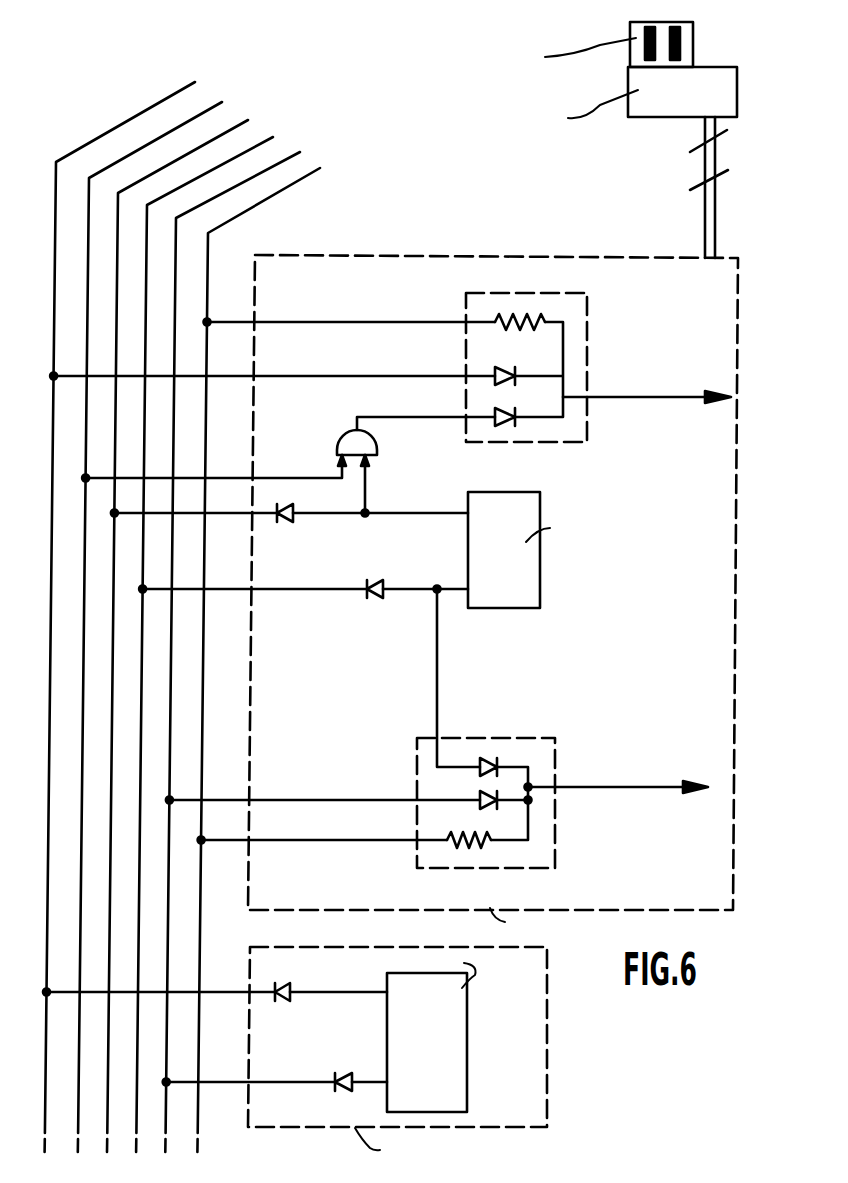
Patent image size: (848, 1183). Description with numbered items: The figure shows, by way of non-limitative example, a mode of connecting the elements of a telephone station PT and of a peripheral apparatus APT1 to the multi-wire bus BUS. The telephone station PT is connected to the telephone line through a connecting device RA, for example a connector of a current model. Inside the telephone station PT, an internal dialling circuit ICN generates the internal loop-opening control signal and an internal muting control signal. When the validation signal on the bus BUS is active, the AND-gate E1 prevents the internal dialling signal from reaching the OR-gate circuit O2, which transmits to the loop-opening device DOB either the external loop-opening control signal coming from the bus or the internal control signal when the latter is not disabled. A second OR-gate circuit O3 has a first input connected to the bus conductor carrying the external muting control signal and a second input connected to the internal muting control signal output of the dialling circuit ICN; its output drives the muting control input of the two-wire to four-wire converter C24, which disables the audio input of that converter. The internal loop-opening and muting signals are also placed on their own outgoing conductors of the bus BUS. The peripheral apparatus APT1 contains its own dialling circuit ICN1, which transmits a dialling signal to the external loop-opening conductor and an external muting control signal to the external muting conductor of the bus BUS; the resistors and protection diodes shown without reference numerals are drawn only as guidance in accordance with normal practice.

The bus BUS is at (398, 147).
The connecting device RA is at (659, 95).
The telephone station PT is at (705, 575).
The OR-gate circuit O2 is at (587, 420).
The loop-opening device DOB is at (647, 384).
The AND-gate E1 is at (346, 447).
The dialling circuit ICN is at (530, 580).
The OR-gate circuit O3 is at (582, 830).
The 2-wire/4-wire converter C24 is at (618, 772).
The peripheral apparatus APT1 is at (547, 1025).
The dialling circuit ICN1 is at (450, 1043).